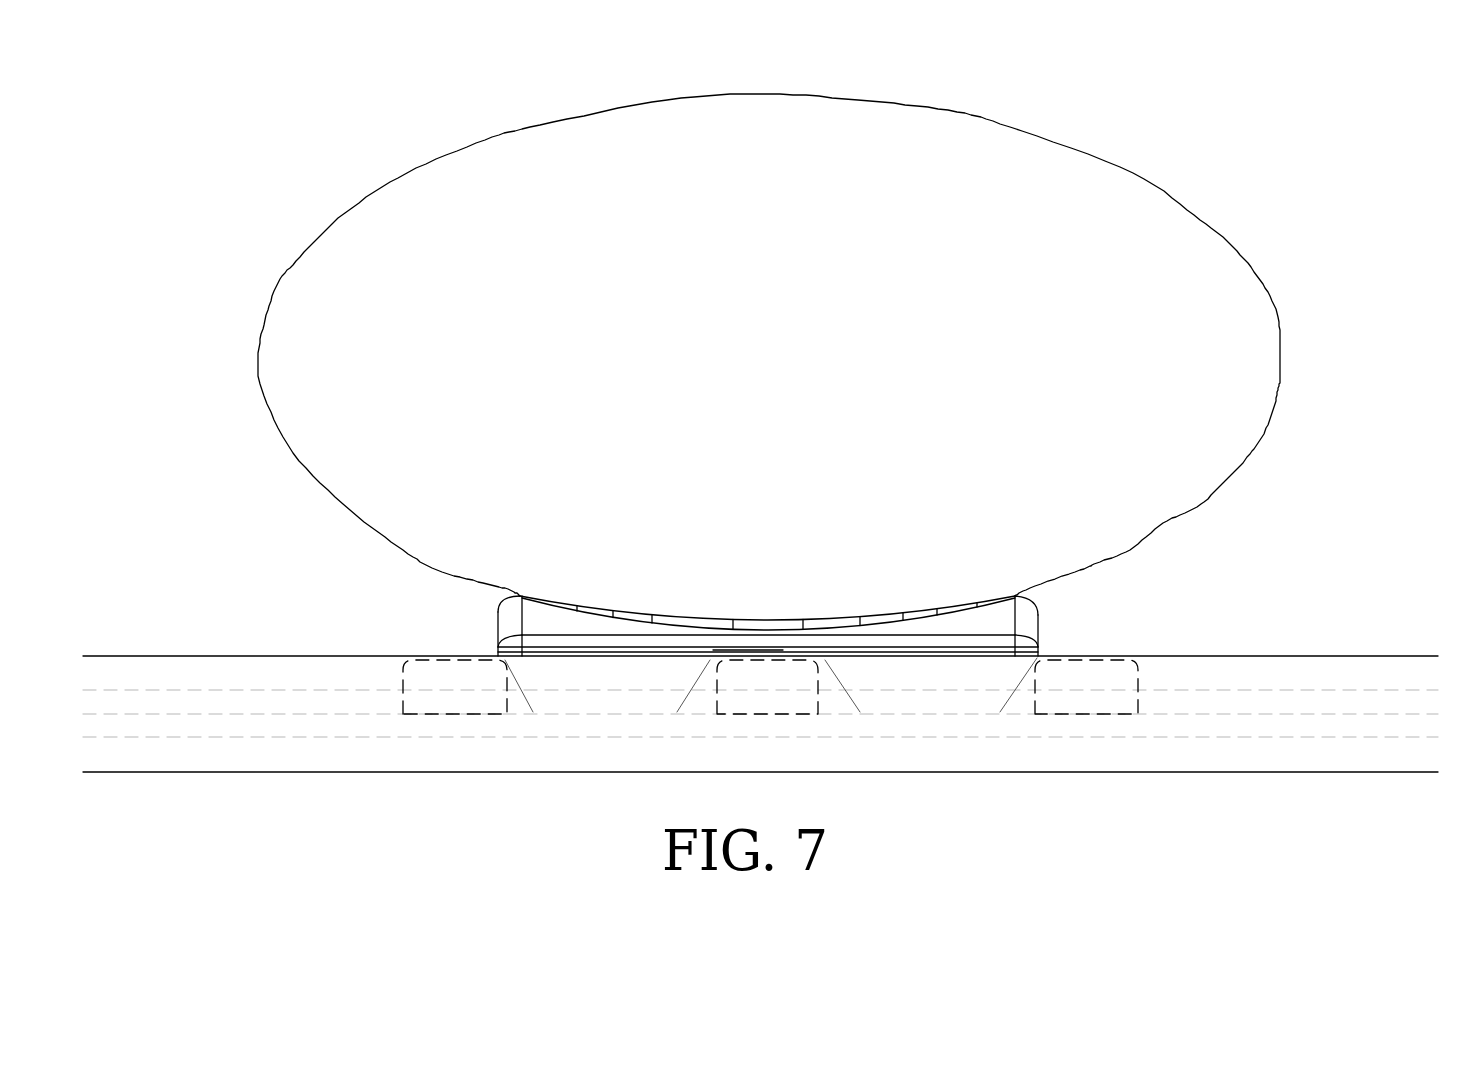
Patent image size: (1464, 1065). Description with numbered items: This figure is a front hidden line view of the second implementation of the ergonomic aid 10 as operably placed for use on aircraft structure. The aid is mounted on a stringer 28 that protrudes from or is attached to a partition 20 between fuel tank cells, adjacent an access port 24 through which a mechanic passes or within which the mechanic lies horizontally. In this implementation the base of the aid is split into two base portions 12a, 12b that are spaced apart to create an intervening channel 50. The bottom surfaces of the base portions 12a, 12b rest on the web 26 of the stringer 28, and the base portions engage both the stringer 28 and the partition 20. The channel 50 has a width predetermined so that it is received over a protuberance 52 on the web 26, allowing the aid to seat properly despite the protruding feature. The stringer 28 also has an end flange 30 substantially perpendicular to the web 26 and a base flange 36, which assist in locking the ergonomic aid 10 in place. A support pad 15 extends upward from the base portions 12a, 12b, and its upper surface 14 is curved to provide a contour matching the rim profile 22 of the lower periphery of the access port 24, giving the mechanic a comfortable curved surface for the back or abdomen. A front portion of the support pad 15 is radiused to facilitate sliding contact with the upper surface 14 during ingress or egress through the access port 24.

The ergonomic aid 10 is at (457, 611).
The base portion 12a is at (623, 672).
The base portion 12b is at (930, 672).
The upper surface 14 is at (862, 625).
The support pad 15 is at (1038, 618).
The partition 20 is at (143, 151).
The rim profile 22 is at (1085, 570).
The access port 24 is at (1092, 295).
The web 26 is at (1302, 725).
The stringer 28 is at (1209, 775).
The end flange 30 is at (1192, 673).
The base flange 36 is at (1325, 705).
The channel 50 is at (697, 700).
The protuberance 52 is at (770, 677).